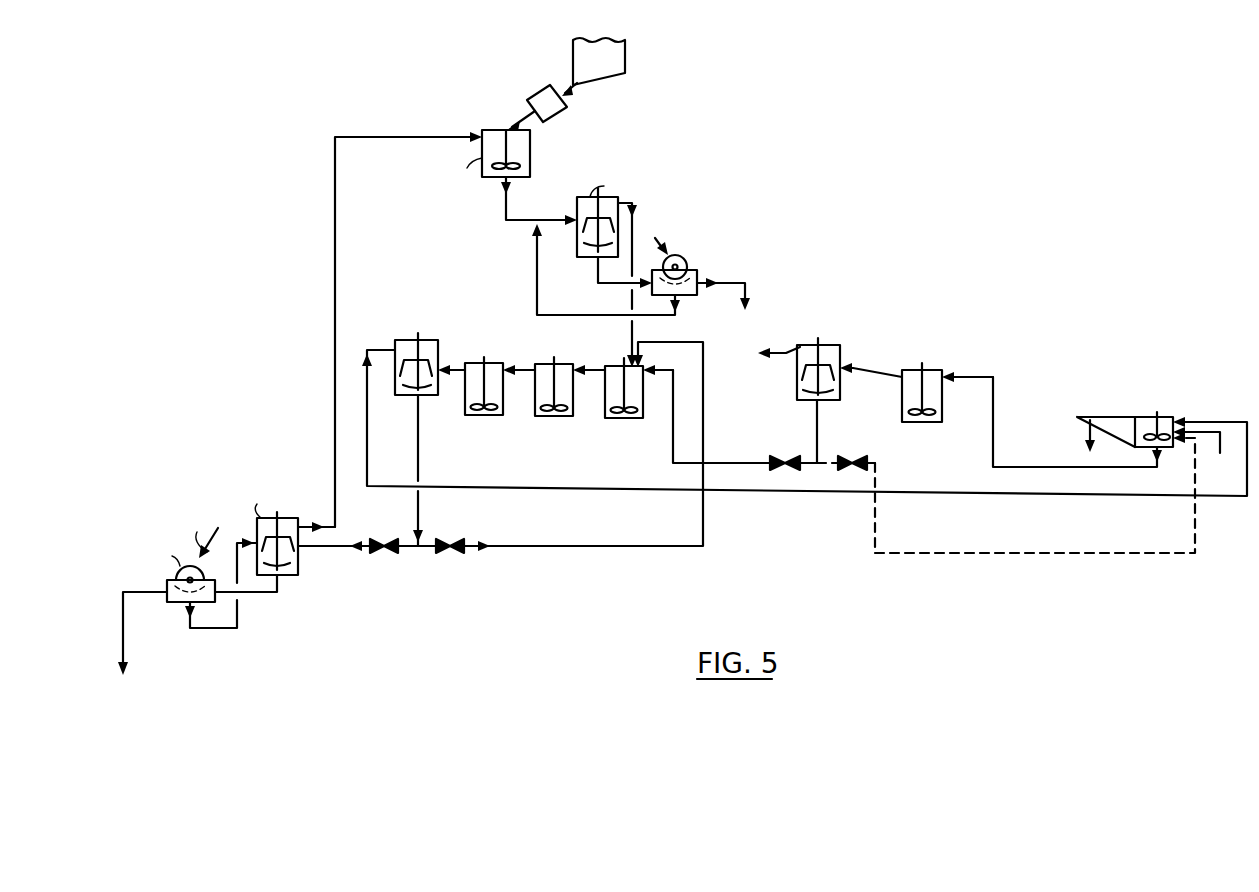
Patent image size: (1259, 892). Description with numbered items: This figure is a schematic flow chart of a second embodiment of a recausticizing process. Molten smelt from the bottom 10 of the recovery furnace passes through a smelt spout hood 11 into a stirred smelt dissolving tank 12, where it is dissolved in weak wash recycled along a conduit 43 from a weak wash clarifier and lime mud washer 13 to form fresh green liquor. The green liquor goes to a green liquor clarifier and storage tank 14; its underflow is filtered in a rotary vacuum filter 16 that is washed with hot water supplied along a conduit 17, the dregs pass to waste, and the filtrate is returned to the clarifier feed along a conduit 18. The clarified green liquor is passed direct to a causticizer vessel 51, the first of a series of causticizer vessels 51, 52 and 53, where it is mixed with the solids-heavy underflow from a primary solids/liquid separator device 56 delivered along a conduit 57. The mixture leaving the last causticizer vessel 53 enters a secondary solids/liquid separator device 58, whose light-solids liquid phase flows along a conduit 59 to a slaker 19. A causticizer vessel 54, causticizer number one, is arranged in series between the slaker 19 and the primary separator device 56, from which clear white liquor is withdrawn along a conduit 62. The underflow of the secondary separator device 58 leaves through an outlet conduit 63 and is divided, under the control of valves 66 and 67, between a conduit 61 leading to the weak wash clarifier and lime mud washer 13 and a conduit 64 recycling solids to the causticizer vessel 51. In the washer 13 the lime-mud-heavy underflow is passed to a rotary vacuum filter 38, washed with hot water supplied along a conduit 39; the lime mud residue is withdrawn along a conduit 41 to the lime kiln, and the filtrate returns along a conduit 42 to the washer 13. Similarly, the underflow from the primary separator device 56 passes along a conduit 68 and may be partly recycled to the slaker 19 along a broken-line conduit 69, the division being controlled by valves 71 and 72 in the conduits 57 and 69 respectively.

The bottom of the recovery furnace 10 is at (625, 53).
The smelt spout hood 11 is at (538, 92).
The smelt dissolving tank 12 is at (530, 150).
The weak wash clarifier and lime mud washer 13 is at (298, 575).
The green liquor clarifier and storage tank 14 is at (577, 243).
The rotary vacuum filter 16 is at (686, 256).
The conduit 17 is at (699, 237).
The conduit 18 is at (537, 268).
The slaker 19 is at (1165, 417).
The rotary vacuum filter 38 is at (168, 579).
The conduit 39 is at (149, 543).
The conduit 41 is at (120, 640).
The conduit 42 is at (238, 612).
The conduit 43 is at (335, 232).
The causticizer vessel 51 is at (610, 366).
The causticizer vessel 52 is at (558, 365).
The causticizer vessel 53 is at (492, 364).
The causticizer vessel 54 is at (942, 404).
The primary solids/liquid separator device 56 is at (842, 386).
The conduit 57 is at (745, 462).
The secondary solids/liquid separator device 58 is at (395, 342).
The conduit 59 is at (521, 489).
The conduit 61 is at (334, 553).
The conduit 62 is at (785, 351).
The outlet conduit 63 is at (425, 504).
The conduit 64 is at (526, 558).
The valve 66 is at (381, 560).
The valve 67 is at (446, 560).
The conduit 68 is at (817, 416).
The conduit 69 is at (875, 534).
The valve 71 is at (786, 459).
The valve 72 is at (850, 460).